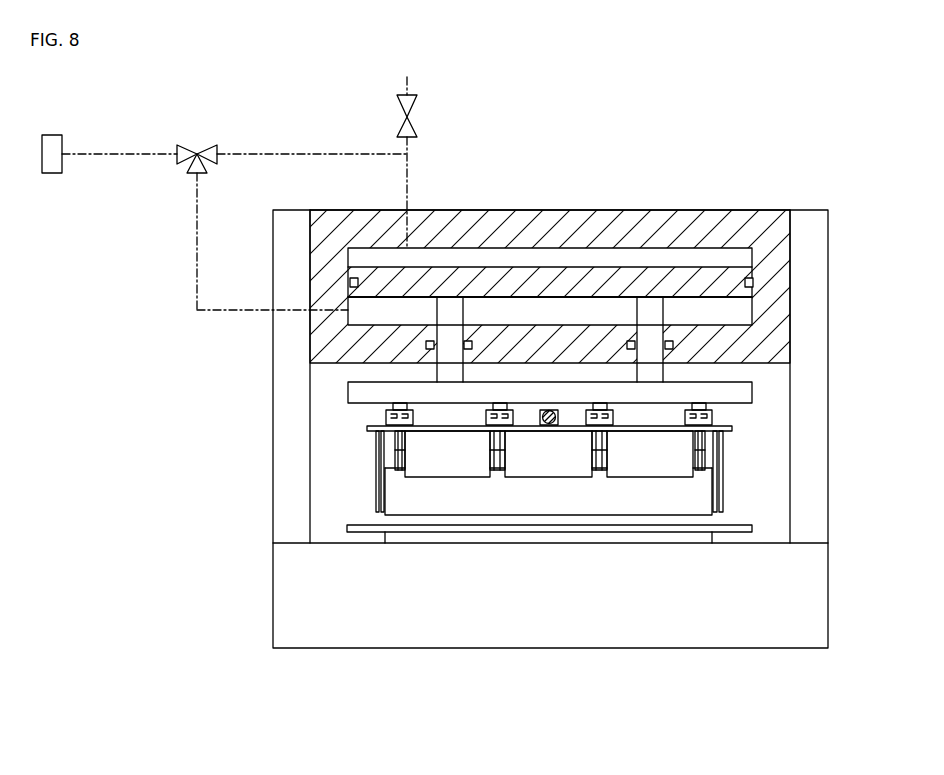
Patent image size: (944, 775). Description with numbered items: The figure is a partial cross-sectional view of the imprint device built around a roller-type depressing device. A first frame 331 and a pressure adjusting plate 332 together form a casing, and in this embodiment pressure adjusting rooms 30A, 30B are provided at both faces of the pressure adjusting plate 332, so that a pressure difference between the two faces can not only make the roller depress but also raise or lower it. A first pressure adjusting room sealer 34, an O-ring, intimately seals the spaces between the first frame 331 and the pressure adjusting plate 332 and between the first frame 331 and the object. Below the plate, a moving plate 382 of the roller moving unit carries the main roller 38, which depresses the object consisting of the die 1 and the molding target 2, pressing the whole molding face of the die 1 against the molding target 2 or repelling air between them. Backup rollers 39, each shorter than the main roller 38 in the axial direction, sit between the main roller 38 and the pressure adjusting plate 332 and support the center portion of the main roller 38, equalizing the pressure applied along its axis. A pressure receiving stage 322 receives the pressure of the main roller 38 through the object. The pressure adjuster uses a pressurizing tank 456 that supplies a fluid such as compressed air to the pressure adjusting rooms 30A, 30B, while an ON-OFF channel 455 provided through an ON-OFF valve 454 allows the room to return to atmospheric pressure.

The die 1 is at (638, 532).
The molding target 2 is at (687, 537).
The pressure adjusting room 30A is at (541, 250).
The pressure adjusting room 30B is at (606, 313).
The first pressure adjusting room sealer 34 is at (745, 278).
The main roller 38 is at (498, 505).
The backup rollers 39 is at (445, 455).
The pressure receiving stage 322 is at (372, 578).
The first frame 331 is at (778, 250).
The pressure adjusting plate 332 is at (487, 283).
The moving plate 382 is at (350, 393).
The ON-OFF valve 454 is at (410, 120).
The ON-OFF channel 455 is at (410, 162).
The pressurizing tank 456 is at (54, 166).